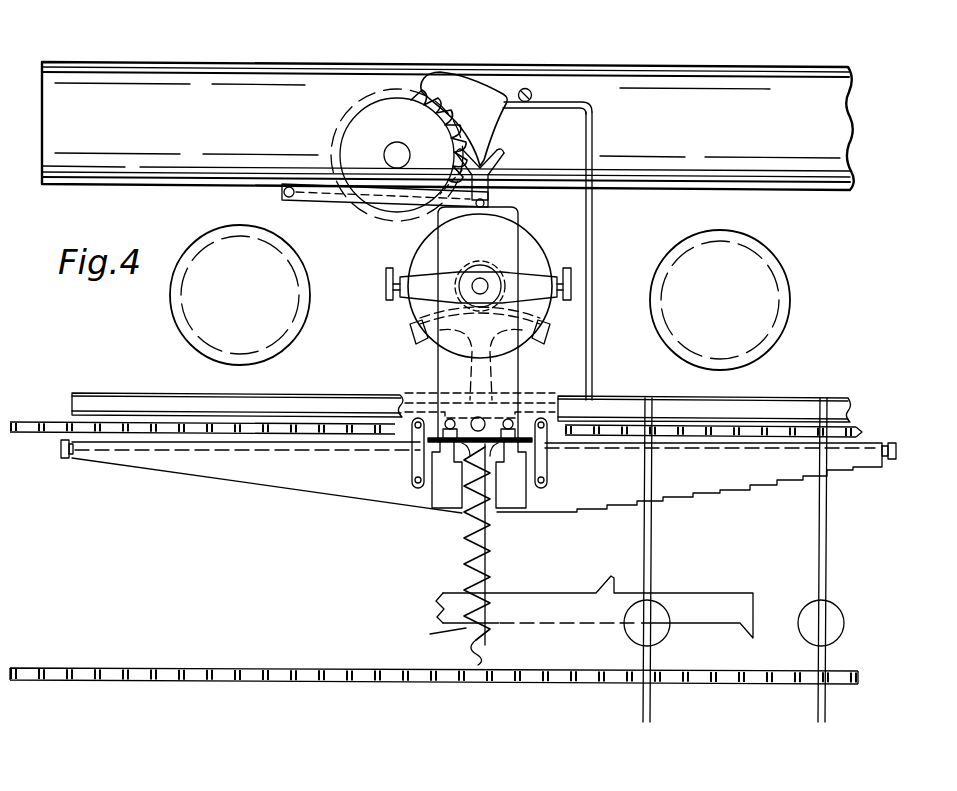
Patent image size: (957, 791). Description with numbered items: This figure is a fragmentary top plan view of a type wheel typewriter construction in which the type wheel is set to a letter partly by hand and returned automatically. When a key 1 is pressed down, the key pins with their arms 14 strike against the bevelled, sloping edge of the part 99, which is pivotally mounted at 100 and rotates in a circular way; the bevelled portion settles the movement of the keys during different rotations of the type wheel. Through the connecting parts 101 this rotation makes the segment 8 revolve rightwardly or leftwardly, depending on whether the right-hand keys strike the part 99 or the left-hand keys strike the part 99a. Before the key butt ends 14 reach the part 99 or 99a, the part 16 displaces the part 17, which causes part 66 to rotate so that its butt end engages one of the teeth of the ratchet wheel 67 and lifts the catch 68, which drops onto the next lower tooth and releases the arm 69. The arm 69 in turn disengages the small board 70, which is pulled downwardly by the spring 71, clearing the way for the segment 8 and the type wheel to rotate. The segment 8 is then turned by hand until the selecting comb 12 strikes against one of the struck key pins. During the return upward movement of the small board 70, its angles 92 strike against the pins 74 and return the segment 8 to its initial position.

The key 1 is at (832, 624).
The segment 8 is at (414, 330).
The selecting comb 12 is at (582, 598).
The key pin arms 14 is at (652, 508).
The part 16 is at (770, 408).
The part 17 is at (592, 228).
The part 66 is at (486, 103).
The ratchet wheel 67 is at (387, 118).
The catch 68 is at (482, 176).
The arm 69 is at (318, 196).
The small board 70 is at (502, 212).
The spring 71 is at (488, 654).
The pins 74 is at (440, 420).
The angles 92 is at (440, 445).
The pivoted part 99 is at (690, 488).
The pivoted part 99a is at (196, 466).
The pivot mounting 100 is at (62, 456).
The connecting parts 101 is at (422, 470).